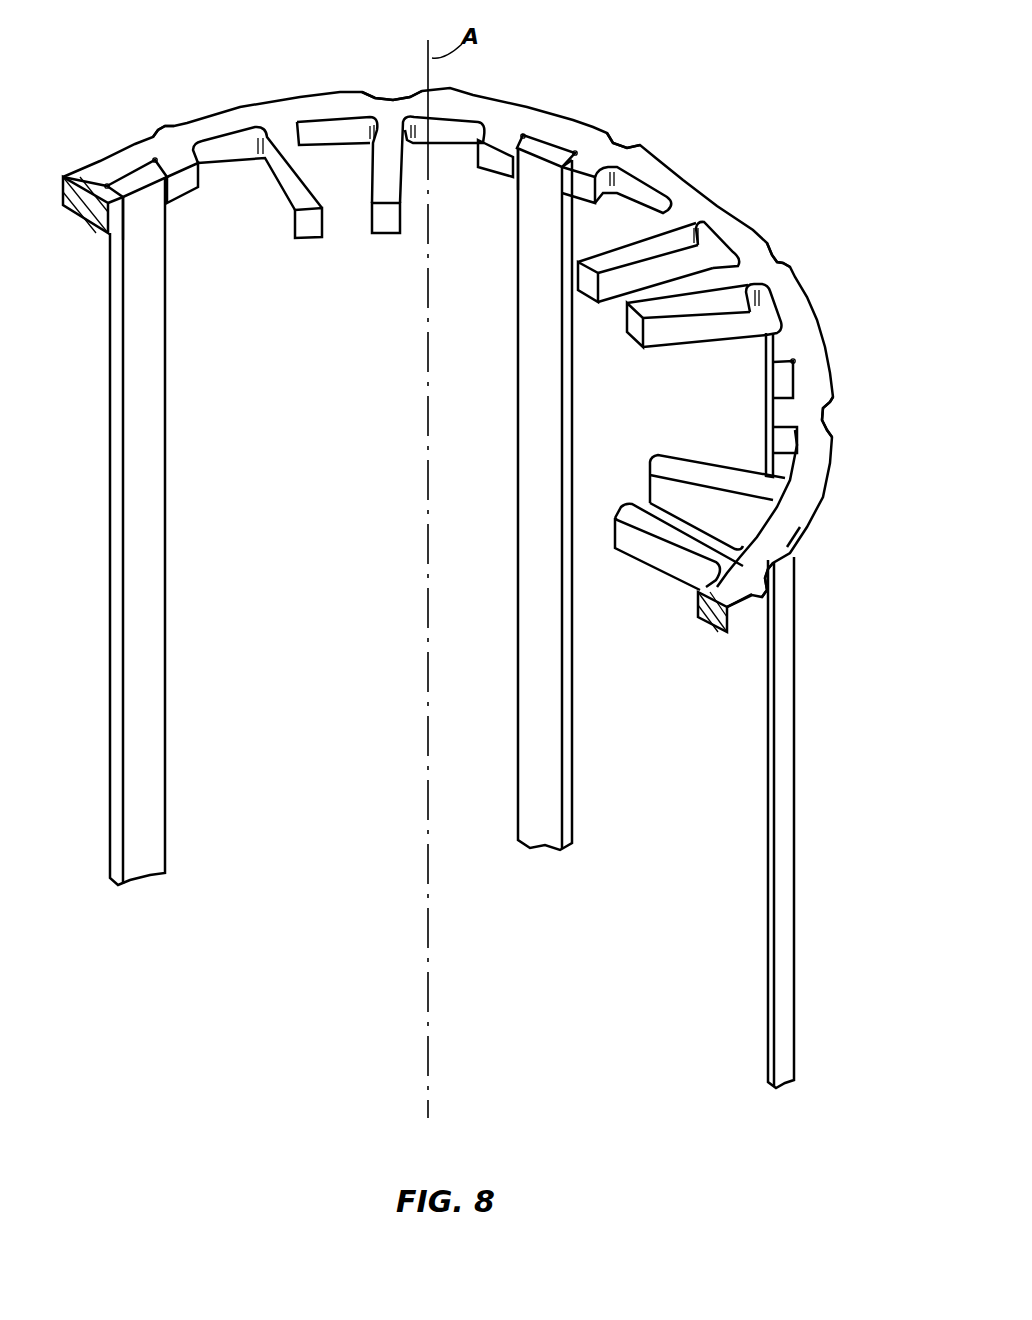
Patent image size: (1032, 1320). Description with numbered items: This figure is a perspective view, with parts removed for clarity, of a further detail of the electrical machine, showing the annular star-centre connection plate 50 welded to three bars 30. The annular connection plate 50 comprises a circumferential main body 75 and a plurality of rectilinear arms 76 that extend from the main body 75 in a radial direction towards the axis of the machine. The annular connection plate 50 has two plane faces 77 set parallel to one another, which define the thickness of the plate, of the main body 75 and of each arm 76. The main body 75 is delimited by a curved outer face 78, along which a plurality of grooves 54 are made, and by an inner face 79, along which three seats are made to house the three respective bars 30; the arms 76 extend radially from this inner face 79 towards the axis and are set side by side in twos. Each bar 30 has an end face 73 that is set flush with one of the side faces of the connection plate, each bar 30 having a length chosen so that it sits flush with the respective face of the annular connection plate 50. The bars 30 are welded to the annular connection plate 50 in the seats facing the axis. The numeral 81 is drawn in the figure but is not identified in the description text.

The bar 30 is at (150, 688).
The annular star-centre connection plate 50 is at (724, 220).
The groove 54 is at (160, 124).
The end face 73 is at (128, 182).
The circumferential main body 75 is at (665, 176).
The arm 76 is at (307, 215).
The plane face 77 is at (216, 178).
The curved outer face 78 is at (815, 518).
The inner face 79 is at (245, 158).
The side strip 81 is at (142, 215).